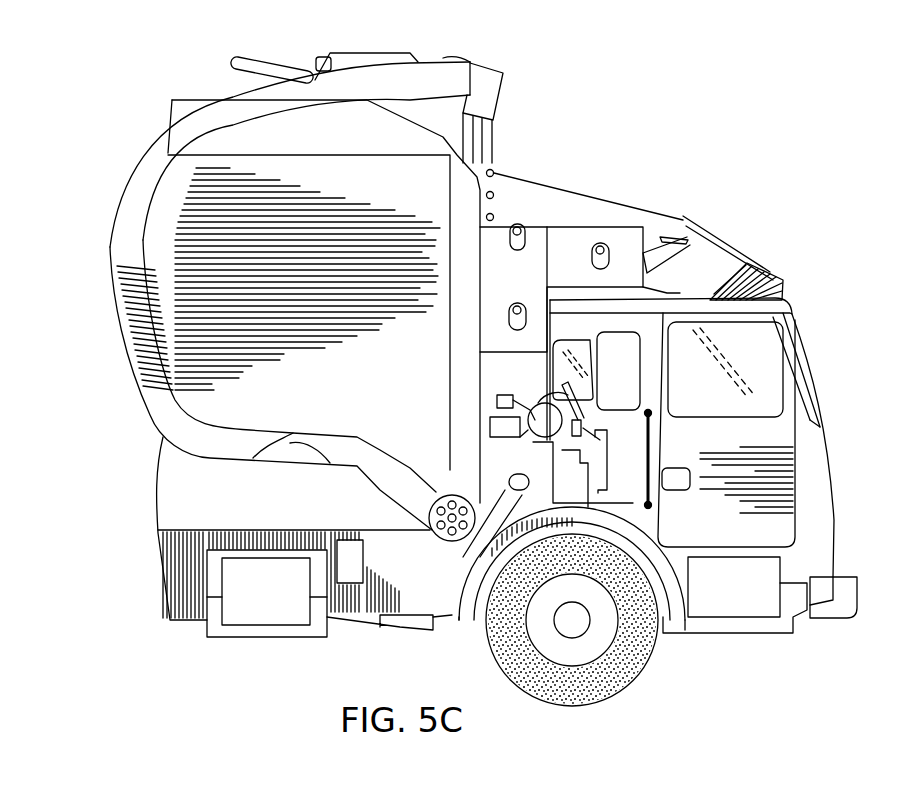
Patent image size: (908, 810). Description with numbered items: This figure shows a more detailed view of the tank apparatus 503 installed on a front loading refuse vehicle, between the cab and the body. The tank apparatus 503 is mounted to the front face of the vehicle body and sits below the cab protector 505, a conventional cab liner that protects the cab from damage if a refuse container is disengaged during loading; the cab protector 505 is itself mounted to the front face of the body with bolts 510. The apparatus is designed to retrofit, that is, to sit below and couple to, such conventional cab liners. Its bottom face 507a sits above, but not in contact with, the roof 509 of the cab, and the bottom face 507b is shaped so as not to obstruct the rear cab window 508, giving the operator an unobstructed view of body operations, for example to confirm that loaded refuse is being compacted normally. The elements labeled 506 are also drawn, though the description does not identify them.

The tank apparatus 503 is at (651, 250).
The cab protector 505 is at (671, 206).
The sensors 506 is at (526, 301).
The bottom face 507a is at (578, 294).
The bottom face 507b is at (508, 360).
The rear cab window 508 is at (581, 362).
The roof 509 is at (737, 296).
The bolts 510 is at (499, 217).